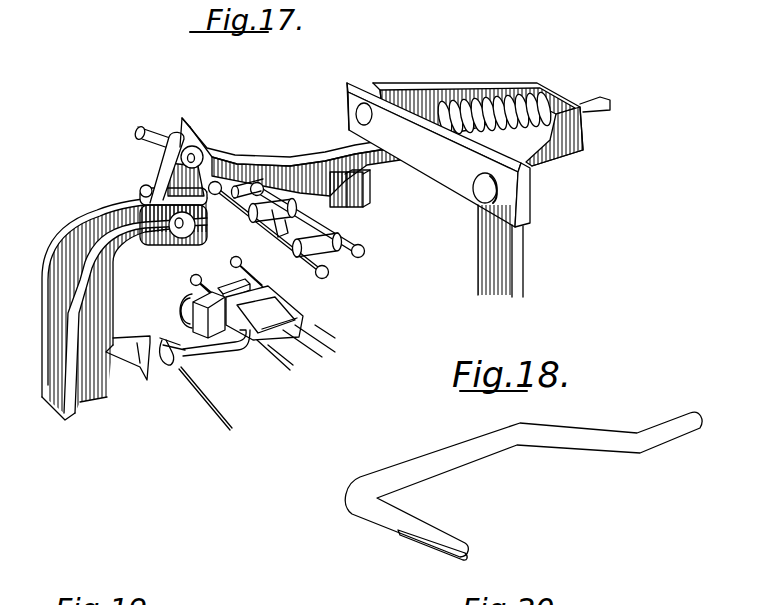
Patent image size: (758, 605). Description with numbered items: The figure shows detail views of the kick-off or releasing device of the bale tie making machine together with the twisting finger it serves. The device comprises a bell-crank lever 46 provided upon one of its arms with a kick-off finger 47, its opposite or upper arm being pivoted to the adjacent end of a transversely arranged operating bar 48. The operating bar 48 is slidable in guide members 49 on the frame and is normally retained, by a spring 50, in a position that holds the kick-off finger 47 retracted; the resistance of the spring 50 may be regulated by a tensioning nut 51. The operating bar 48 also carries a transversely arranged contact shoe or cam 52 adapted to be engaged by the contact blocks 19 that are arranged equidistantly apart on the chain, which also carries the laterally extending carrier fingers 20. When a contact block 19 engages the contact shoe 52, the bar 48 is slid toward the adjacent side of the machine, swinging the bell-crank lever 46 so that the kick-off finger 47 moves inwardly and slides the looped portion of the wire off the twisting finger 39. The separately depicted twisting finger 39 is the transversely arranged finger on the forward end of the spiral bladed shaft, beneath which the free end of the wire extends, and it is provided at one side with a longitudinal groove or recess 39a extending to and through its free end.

In FIG. 17, the contact block 19 is at (270, 148).
In FIG. 17, the carrier finger 20 is at (213, 360).
In FIG. 17, the twisting finger 39 is at (167, 367).
In FIG. 18, the twisting finger 39 is at (417, 523).
In FIG. 17, the longitudinal groove 39a is at (182, 387).
In FIG. 18, the longitudinal groove 39a is at (428, 550).
In FIG. 17, the bell-crank lever 46 is at (108, 297).
In FIG. 17, the kick-off finger 47 is at (135, 382).
In FIG. 17, the operating bar 48 is at (242, 158).
In FIG. 17, the guide member 49 is at (484, 178).
In FIG. 17, the spring 50 is at (473, 94).
In FIG. 17, the tensioning nut 51 is at (543, 93).
In FIG. 17, the contact shoe 52 is at (347, 200).